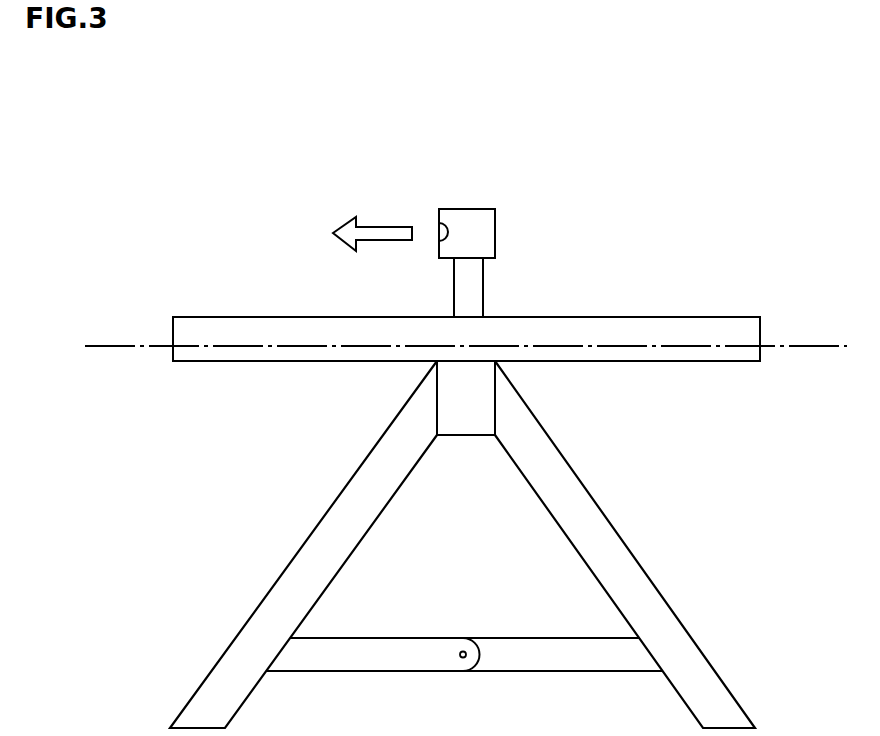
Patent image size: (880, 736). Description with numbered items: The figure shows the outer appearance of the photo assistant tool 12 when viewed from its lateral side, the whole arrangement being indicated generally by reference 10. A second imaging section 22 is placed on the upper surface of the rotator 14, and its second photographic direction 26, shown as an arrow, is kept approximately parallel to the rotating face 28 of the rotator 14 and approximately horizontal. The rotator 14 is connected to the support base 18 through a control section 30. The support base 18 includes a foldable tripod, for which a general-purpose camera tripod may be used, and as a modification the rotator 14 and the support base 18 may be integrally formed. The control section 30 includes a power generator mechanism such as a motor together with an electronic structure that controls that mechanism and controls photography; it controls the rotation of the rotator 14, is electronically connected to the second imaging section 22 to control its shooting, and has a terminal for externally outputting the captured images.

The laser processing apparatus 10 is at (672, 113).
The photo assistant tool 12 is at (462, 544).
The rotator 14 is at (693, 330).
The support base 18 is at (642, 587).
The second imaging section 22 is at (468, 218).
The second photographic direction 26 is at (385, 232).
The rotating face 28 is at (800, 348).
The control section 30 is at (477, 398).